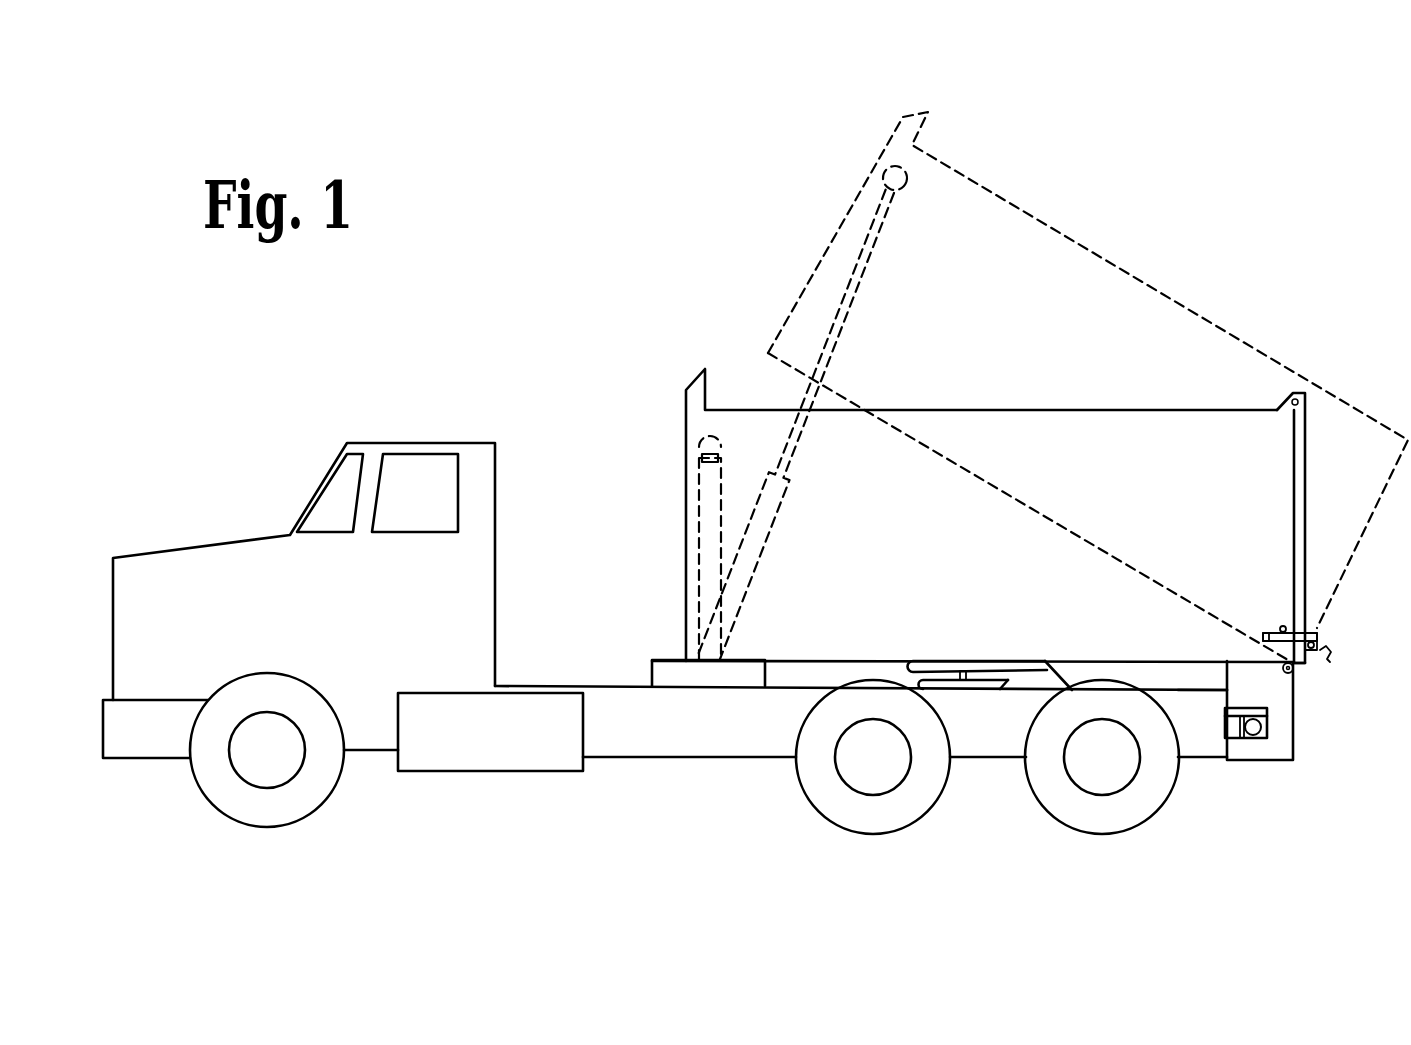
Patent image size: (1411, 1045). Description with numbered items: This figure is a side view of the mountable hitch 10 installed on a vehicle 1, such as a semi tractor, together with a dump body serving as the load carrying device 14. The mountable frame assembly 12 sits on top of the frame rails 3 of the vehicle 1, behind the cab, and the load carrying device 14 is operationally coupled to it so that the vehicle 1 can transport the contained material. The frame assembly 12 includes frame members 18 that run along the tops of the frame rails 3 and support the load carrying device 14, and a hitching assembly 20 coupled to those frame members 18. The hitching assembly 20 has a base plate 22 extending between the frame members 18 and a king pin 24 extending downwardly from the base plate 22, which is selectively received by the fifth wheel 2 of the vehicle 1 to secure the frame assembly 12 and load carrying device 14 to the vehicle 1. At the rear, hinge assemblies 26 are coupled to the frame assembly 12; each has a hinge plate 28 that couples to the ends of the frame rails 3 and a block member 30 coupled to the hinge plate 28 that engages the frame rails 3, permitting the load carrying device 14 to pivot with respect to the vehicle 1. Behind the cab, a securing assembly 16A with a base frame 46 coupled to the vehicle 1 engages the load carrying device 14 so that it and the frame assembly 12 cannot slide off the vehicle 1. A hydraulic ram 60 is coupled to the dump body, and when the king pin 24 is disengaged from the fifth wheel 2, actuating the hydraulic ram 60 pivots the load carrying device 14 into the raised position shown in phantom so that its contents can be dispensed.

The vehicle 1 is at (350, 446).
The fifth wheel 2 is at (948, 683).
The frame rails 3 is at (1197, 742).
The mountable hitch 10 is at (1280, 248).
The mountable frame assembly 12 is at (1087, 647).
The load carrying device 14 is at (748, 437).
The securing assembly 16A is at (637, 663).
The frame members 18 is at (1195, 679).
The hitching assembly 20 is at (893, 668).
The base plate 22 is at (923, 665).
The king pin 24 is at (965, 673).
The hinge assemblies 26 is at (1302, 688).
The hinge plate 28 is at (1280, 702).
The block member 30 is at (1295, 760).
The base frame 46 is at (677, 673).
The hydraulic ram 60 is at (706, 533).